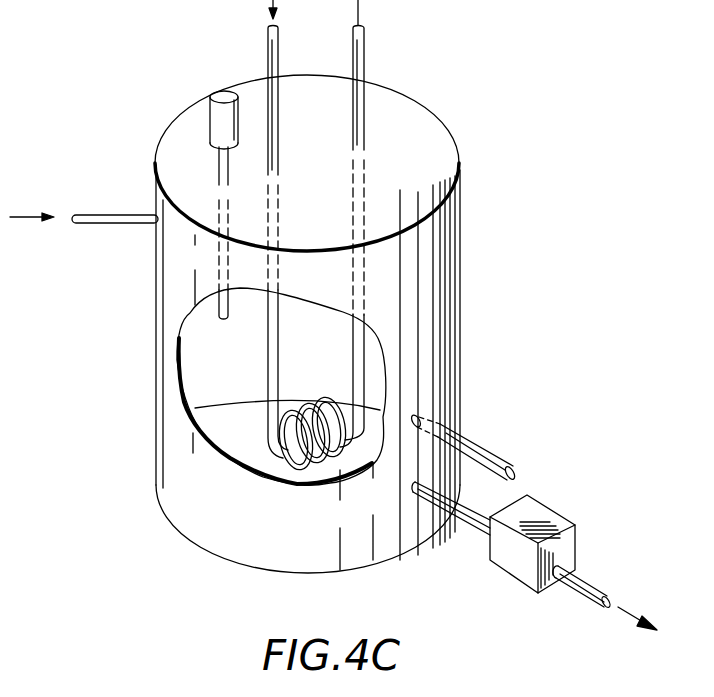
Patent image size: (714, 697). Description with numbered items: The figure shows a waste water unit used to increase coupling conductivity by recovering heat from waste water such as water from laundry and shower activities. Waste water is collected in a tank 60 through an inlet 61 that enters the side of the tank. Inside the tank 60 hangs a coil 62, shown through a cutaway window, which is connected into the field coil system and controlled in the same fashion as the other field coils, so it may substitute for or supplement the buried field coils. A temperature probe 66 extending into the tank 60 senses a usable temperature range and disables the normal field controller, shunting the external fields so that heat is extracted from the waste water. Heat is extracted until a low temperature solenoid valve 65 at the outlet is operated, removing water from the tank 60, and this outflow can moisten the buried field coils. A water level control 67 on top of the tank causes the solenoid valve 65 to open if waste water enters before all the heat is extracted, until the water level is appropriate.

The tank 60 is at (170, 442).
The inlet 61 is at (103, 190).
The coil 62 is at (328, 462).
The low temperature solenoid valve 65 is at (590, 588).
The temperature probe 66 is at (485, 452).
The water level control 67 is at (216, 107).